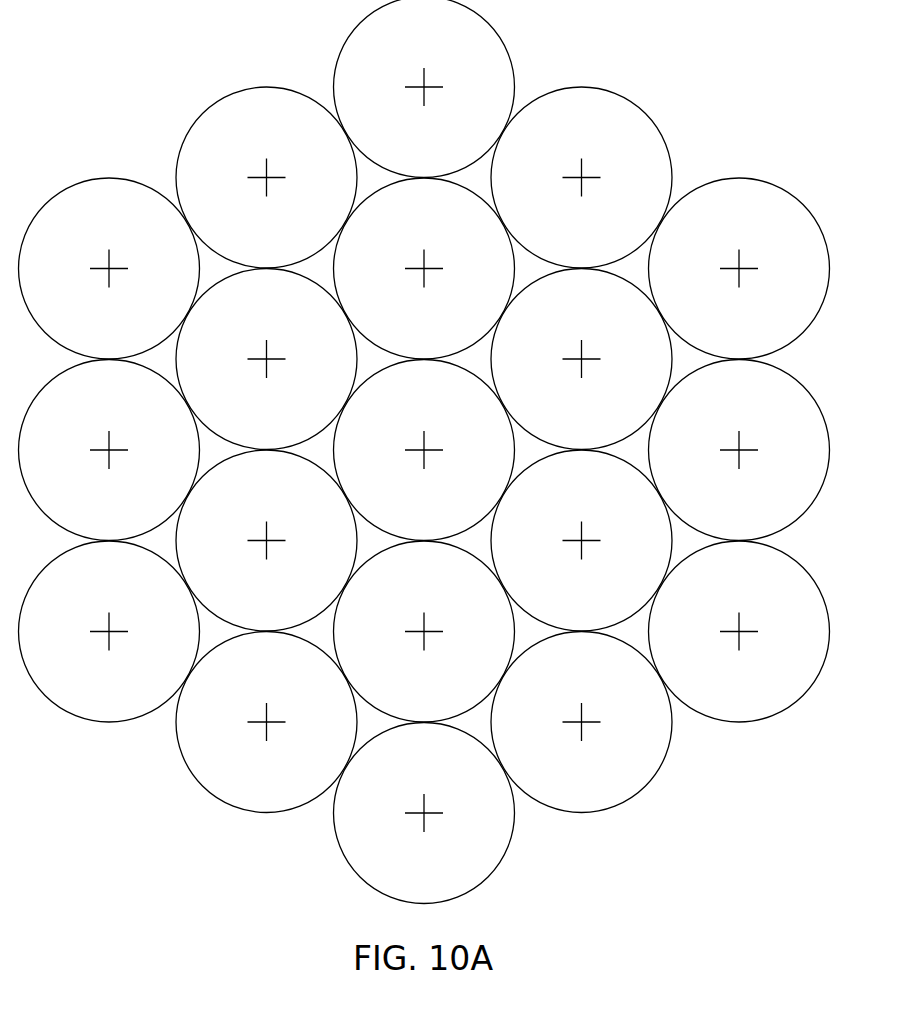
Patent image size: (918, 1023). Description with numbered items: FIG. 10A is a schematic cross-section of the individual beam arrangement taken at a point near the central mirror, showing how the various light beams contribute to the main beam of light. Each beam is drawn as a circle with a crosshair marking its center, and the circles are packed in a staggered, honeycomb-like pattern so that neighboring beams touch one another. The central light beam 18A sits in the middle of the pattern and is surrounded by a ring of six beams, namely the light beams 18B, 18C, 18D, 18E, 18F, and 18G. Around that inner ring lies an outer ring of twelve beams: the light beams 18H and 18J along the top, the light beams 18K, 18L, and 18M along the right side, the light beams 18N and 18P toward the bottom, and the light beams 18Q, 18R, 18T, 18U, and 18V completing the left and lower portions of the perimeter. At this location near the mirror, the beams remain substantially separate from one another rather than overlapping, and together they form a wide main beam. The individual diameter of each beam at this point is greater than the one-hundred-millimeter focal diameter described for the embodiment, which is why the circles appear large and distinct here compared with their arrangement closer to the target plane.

The light beam 18A is at (404, 503).
The light beam 18B is at (404, 322).
The light beam 18C is at (602, 412).
The light beam 18D is at (602, 594).
The light beam 18E is at (404, 684).
The light beam 18F is at (246, 594).
The light beam 18G is at (246, 412).
The light beam 18H is at (404, 140).
The light beam 18J is at (602, 230).
The light beam 18K is at (719, 322).
The light beam 18L is at (719, 503).
The light beam 18M is at (719, 684).
The light beam 18N is at (602, 775).
The light beam 18P is at (404, 866).
The light beam 18Q is at (246, 775).
The light beam 18R is at (89, 684).
The light beam 18T is at (89, 503).
The light beam 18U is at (89, 322).
The light beam 18V is at (246, 230).